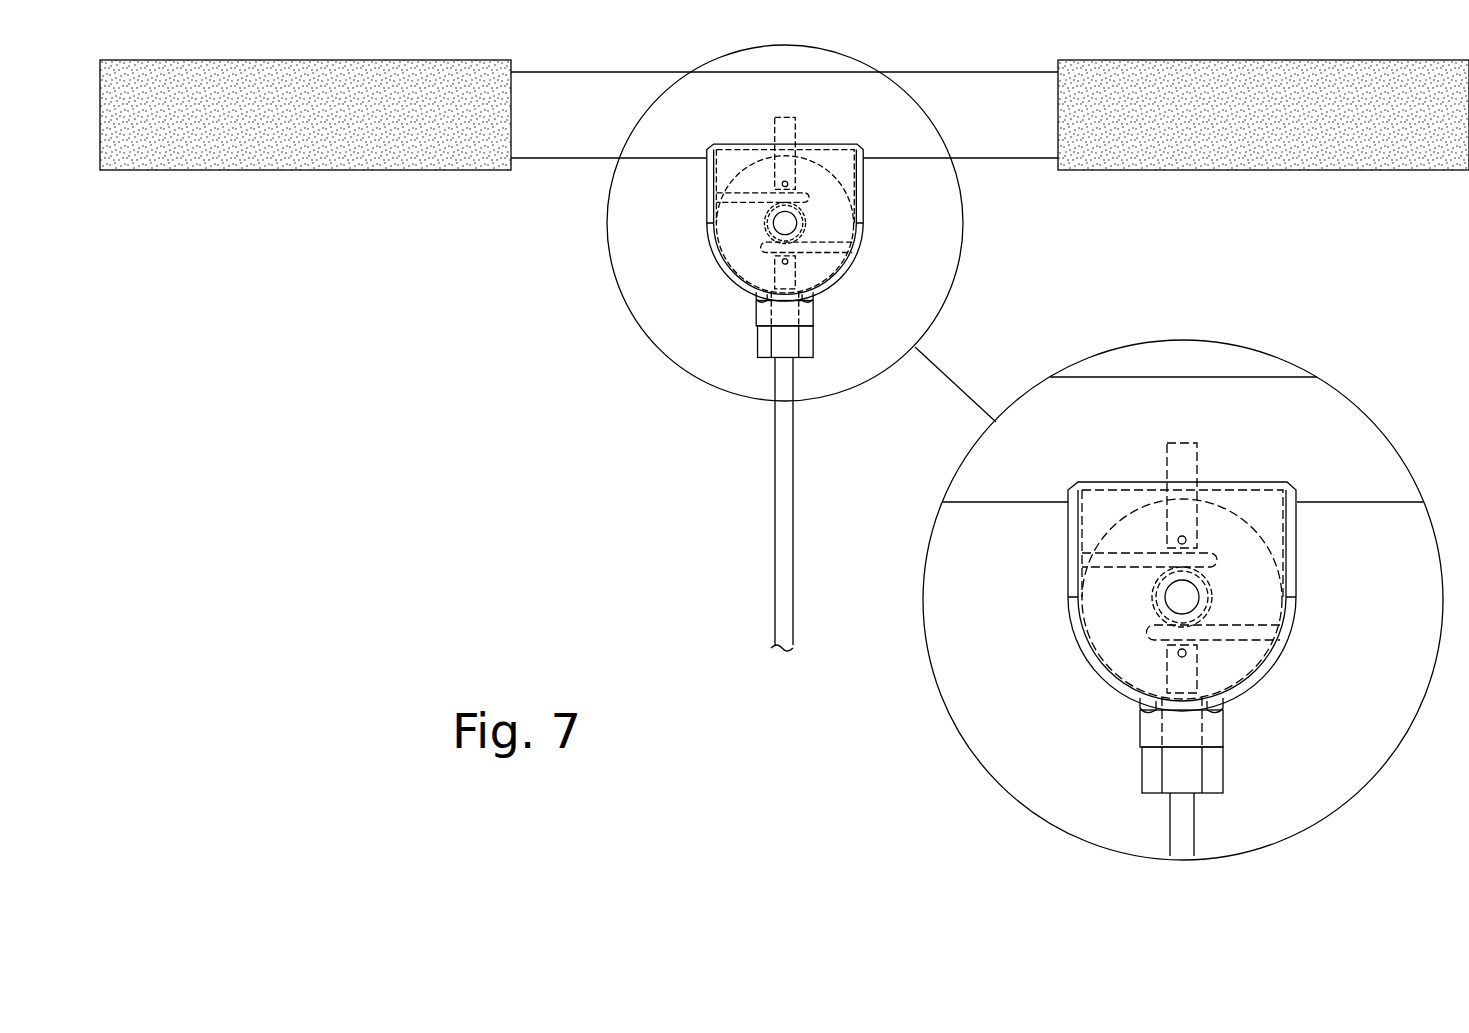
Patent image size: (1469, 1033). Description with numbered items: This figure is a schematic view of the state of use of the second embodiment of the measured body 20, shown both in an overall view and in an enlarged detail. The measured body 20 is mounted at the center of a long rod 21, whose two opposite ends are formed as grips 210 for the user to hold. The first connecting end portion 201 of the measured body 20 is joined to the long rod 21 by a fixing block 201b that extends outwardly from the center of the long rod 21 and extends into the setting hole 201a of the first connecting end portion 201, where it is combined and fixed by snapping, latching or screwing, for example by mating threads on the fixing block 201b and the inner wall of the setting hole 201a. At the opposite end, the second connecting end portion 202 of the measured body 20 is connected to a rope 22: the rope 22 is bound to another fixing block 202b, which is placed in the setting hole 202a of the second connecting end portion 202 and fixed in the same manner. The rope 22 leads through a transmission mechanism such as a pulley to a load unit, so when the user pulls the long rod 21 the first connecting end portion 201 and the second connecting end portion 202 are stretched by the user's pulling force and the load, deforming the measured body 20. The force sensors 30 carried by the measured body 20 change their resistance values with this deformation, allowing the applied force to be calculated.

The measured body 20 is at (835, 220).
The long rod 21 is at (1001, 134).
The rope 22 is at (783, 535).
The force sensor 30 is at (1170, 606).
The first connecting end portion 201 is at (1202, 502).
The setting hole 201a is at (1188, 528).
The fixing block 201b is at (1178, 457).
The second connecting end portion 202 is at (1213, 678).
The setting hole 202a is at (1188, 673).
The fixing block 202b is at (1178, 670).
The grip 210 is at (216, 147).